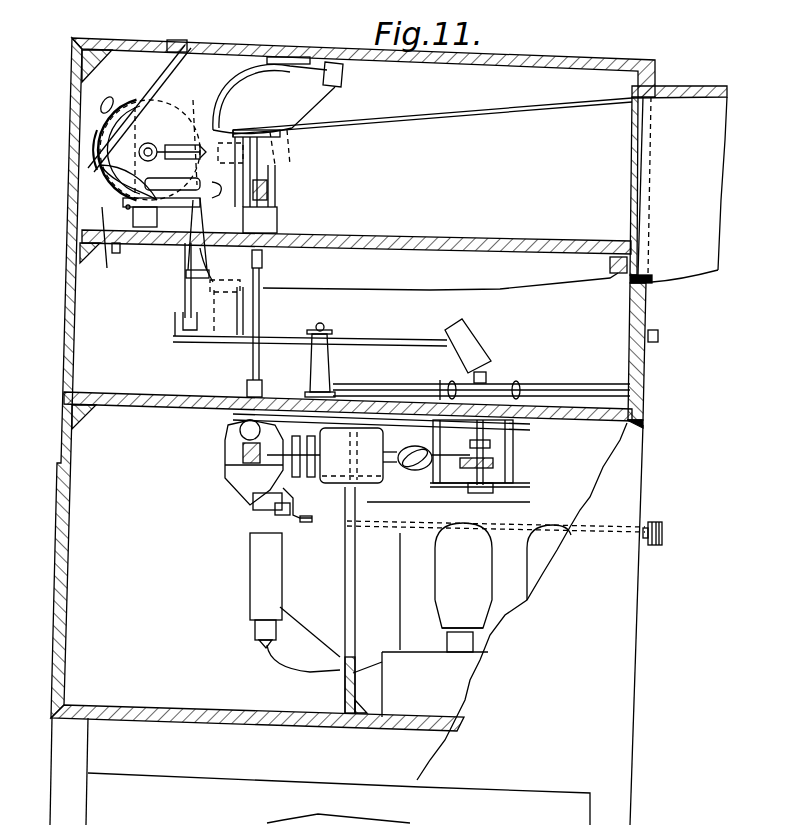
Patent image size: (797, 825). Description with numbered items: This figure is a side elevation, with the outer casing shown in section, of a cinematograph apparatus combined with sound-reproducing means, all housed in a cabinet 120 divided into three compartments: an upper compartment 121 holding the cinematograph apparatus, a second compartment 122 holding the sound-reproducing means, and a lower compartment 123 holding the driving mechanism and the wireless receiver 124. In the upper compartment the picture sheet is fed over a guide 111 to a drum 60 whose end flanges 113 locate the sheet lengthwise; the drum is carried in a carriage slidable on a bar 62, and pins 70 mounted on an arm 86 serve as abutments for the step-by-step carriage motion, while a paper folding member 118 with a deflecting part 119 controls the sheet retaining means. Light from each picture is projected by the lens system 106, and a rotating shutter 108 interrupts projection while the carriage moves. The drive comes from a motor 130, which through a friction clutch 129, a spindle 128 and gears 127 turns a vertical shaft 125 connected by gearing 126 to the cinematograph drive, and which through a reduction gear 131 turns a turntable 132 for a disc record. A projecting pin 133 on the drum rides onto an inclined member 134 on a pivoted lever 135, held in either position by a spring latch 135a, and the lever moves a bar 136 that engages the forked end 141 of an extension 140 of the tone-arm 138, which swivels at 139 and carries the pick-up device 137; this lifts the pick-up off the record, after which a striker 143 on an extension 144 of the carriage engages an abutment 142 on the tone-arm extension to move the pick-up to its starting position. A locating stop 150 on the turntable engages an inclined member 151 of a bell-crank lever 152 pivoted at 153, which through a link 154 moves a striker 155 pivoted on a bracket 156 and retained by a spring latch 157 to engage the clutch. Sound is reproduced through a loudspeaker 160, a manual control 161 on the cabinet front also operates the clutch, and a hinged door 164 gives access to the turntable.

The drum 60 is at (158, 107).
The bar 62 is at (141, 138).
The pins 70 is at (214, 201).
The arm 86 is at (139, 152).
The lens system 106 is at (228, 85).
The rotating shutter 108 is at (258, 148).
The guide 111 is at (162, 80).
The end flanges 113 is at (200, 142).
The paper folding member 118 is at (132, 95).
The deflecting part 119 is at (138, 76).
The cabinet 120 is at (72, 368).
The upper compartment 121 is at (106, 249).
The second compartment 122 is at (136, 372).
The lower compartment 123 is at (143, 683).
The wireless receiver 124 is at (416, 603).
The vertical shaft 125 is at (260, 300).
The gearing 126 is at (270, 188).
The gears 127 is at (233, 466).
The spindle 128 is at (237, 480).
The friction clutch 129 is at (232, 428).
The driving motor 130 is at (367, 484).
The reduction gear 131 is at (505, 474).
The turntable 132 is at (575, 395).
The projecting pin 133 is at (93, 160).
The inclined member 134 is at (103, 180).
The pivoted lever 135 is at (110, 250).
The spring latch 135a is at (133, 203).
The bar 136 is at (186, 297).
The pick-up device 137 is at (467, 330).
The tone-arm 138 is at (410, 336).
The swivel mounting 139 is at (323, 330).
The extension of the tone-arm 140 is at (247, 390).
The forked end 141 is at (171, 339).
The abutment 142 is at (244, 281).
The striker 143 is at (215, 340).
The extension of the sliding carriage 144 is at (227, 269).
The locating stop 150 is at (452, 382).
The inclined member 151 is at (452, 398).
The bell-crank lever 152 is at (514, 445).
The pivot 153 is at (481, 382).
The link 154 is at (348, 527).
The striker 155 is at (344, 506).
The bracket 156 is at (280, 494).
The spring latch 157 is at (278, 506).
The loudspeaker 160 is at (252, 597).
The manual control 161 is at (658, 524).
The hinged door 164 is at (645, 363).